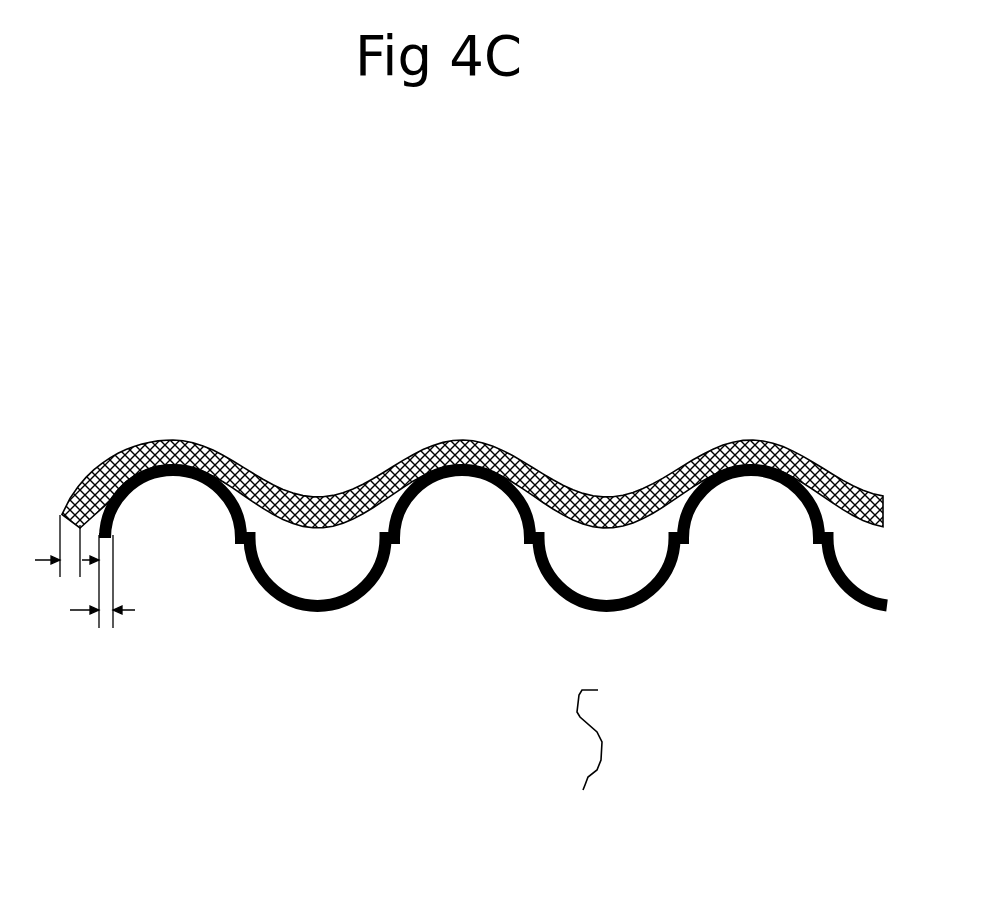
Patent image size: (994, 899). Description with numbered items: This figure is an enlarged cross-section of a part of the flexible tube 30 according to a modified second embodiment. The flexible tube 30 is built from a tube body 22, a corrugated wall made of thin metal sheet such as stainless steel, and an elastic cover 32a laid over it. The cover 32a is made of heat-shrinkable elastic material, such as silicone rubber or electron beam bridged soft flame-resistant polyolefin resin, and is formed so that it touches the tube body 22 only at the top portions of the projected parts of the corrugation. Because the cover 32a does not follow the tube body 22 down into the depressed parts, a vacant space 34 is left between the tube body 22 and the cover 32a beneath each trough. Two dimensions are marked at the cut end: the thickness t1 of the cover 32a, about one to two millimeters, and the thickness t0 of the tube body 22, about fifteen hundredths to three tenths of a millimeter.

The tube body 22 is at (307, 612).
The elastic cover 32a is at (532, 482).
The hollow space between core and cover layer 34 is at (328, 562).
The flexible tube 30 is at (603, 833).
The thickness of the tube body t0 is at (102, 597).
The thickness of the cover t1 is at (65, 546).